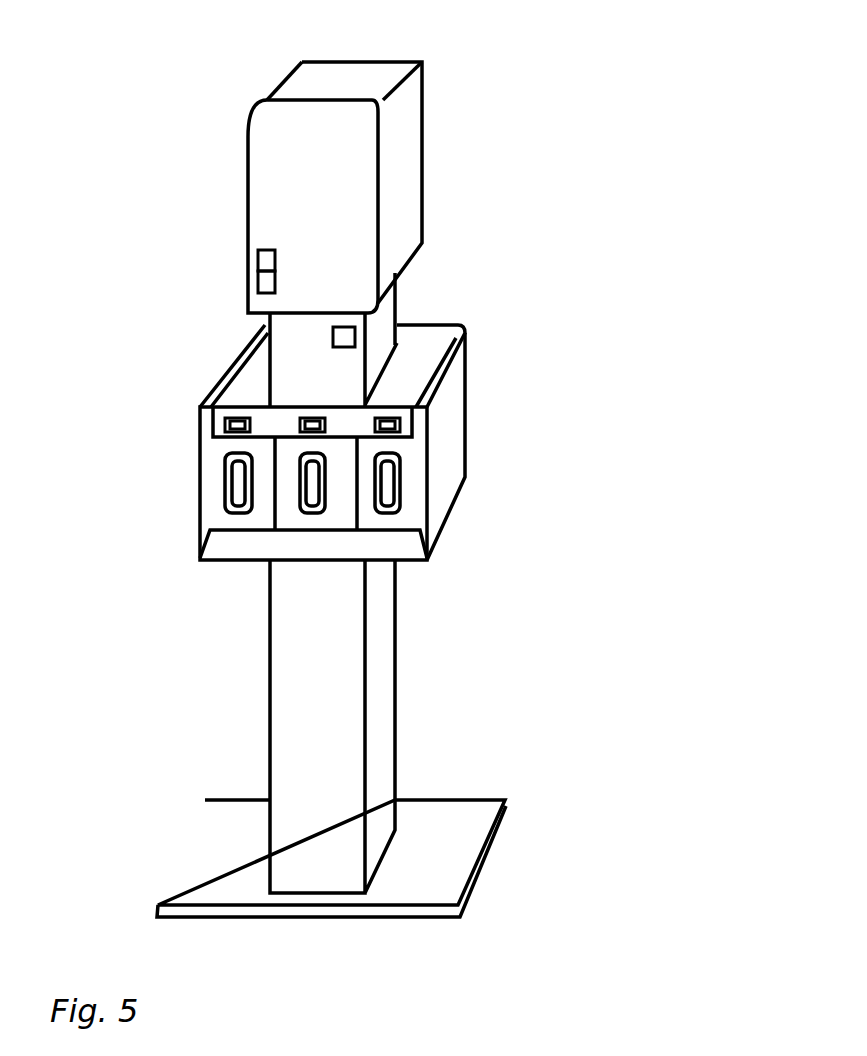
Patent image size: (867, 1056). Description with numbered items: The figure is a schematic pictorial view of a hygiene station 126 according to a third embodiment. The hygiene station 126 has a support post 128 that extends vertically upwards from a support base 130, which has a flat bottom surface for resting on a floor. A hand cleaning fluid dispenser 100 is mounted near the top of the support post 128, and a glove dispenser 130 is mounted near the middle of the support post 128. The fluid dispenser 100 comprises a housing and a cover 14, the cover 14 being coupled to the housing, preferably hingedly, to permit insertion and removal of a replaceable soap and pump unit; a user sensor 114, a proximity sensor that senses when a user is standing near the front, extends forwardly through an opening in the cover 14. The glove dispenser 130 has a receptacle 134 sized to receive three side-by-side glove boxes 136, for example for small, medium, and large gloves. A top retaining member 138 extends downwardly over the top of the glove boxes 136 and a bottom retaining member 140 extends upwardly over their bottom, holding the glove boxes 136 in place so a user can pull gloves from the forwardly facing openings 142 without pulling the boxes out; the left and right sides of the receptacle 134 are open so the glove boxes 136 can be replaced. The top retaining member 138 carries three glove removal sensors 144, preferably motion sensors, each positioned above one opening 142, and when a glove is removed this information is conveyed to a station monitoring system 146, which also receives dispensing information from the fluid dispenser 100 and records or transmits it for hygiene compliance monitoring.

The hand cleaning fluid dispenser 100 is at (315, 185).
The cover 14 is at (272, 145).
The user sensor 114 is at (253, 280).
The hygiene station 126 is at (613, 88).
The top retaining member 138 is at (432, 418).
The bottom retaining member 140 is at (403, 545).
The receptacle 134 is at (253, 548).
The glove boxes 136 is at (213, 495).
The glove removal sensors 144 is at (300, 418).
The forwardly facing openings 142 is at (550, 438).
The station monitoring system 146 is at (342, 332).
The support post 128 is at (352, 675).
The glove dispenser 130 is at (457, 840).